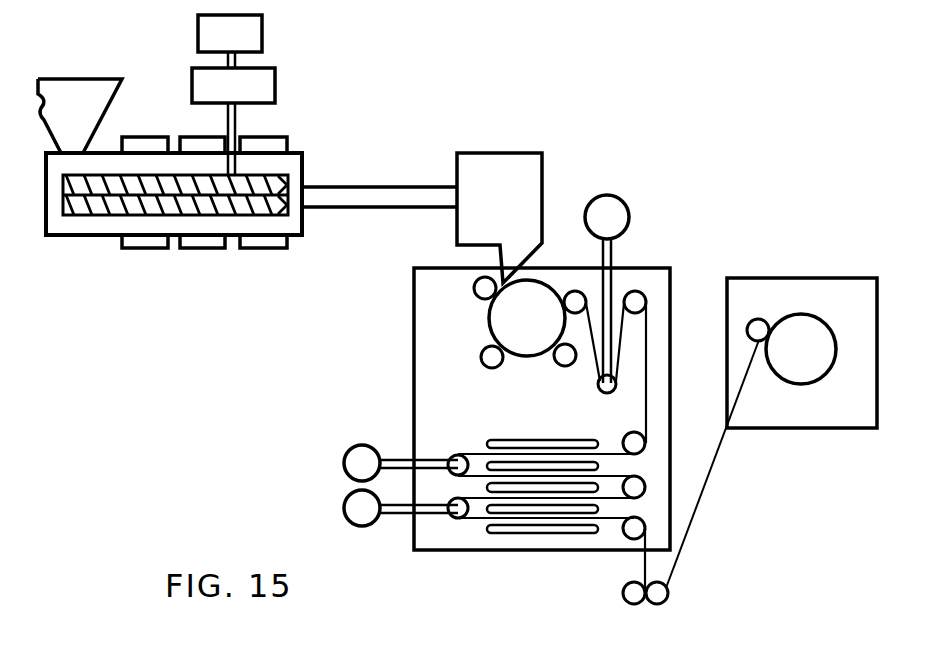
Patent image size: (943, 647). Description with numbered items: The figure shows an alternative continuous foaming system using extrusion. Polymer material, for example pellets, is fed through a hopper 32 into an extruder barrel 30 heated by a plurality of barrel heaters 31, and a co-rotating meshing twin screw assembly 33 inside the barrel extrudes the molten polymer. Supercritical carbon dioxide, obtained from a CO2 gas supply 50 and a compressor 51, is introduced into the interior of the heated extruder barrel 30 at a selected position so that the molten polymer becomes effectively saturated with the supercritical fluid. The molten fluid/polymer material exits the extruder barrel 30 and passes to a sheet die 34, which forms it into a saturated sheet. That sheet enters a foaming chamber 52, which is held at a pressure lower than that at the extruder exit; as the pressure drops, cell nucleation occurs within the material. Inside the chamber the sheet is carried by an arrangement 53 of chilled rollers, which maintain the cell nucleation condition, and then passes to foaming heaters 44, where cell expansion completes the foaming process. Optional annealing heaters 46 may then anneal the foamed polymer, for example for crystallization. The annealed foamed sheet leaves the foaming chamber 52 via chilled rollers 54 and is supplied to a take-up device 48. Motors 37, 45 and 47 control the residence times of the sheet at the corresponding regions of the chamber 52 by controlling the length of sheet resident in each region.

The extruder barrel 30 is at (66, 236).
The barrel heaters 31 is at (235, 248).
The hopper 32 is at (122, 80).
The co-rotating meshing twin screw assembly 33 is at (115, 190).
The sheet die 34 is at (540, 155).
The motor 37 is at (627, 203).
The foaming heaters 44 is at (538, 465).
The motor 45 is at (349, 452).
The annealing heaters 46 is at (548, 507).
The motor 47 is at (343, 507).
The take-up device 48 is at (762, 277).
The CO2 gas supply 50 is at (262, 31).
The compressor 51 is at (275, 84).
The foaming chamber 52 is at (414, 333).
The arrangement of chilled rollers 53 is at (470, 319).
The chilled rollers 54 is at (663, 598).